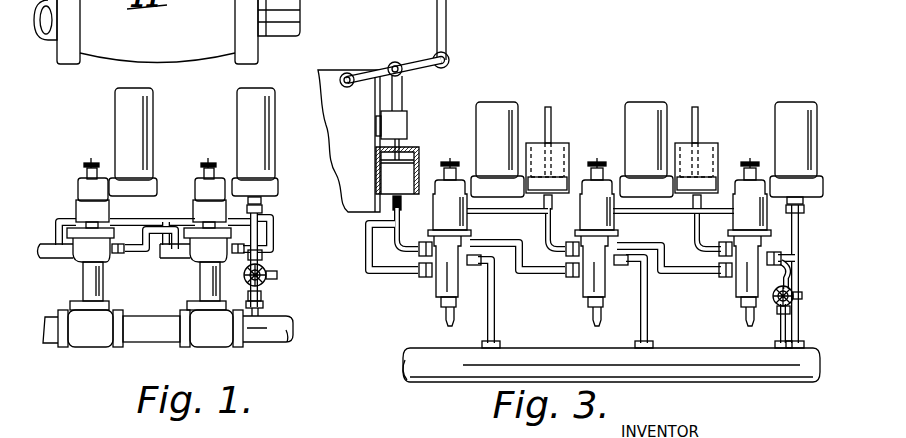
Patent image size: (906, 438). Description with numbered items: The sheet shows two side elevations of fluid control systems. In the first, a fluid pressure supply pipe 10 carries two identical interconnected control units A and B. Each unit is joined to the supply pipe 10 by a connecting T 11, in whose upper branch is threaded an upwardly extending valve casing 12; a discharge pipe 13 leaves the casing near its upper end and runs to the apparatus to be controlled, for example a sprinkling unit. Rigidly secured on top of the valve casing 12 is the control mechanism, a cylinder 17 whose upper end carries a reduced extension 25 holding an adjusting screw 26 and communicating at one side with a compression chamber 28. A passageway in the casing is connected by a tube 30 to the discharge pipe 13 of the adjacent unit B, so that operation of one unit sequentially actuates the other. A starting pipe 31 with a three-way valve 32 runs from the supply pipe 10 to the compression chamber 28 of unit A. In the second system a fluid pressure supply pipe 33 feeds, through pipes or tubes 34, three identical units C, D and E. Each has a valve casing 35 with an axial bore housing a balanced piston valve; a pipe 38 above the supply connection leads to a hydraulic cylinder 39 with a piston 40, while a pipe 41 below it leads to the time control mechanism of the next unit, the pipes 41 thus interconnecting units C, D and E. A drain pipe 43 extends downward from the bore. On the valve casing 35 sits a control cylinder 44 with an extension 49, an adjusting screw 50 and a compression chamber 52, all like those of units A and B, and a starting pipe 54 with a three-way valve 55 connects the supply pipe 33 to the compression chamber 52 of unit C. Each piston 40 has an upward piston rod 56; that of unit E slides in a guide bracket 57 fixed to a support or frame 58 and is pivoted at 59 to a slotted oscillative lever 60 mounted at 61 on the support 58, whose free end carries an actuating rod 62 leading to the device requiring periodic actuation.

In FIG. 1, the fluid pressure supply pipe 10 is at (160, 327).
In FIG. 1, the connecting T 11 is at (100, 333).
In FIG. 1, the valve casing 12 is at (88, 278).
In FIG. 1, the discharge pipe 13 is at (62, 250).
In FIG. 1, the cylinder 17 is at (87, 210).
In FIG. 1, the extension 25 is at (93, 188).
In FIG. 1, the adjusting screw 26 is at (93, 158).
In FIG. 1, the compression chamber 28 is at (127, 108).
In FIG. 1, the tube 30 is at (135, 250).
In FIG. 1, the starting pipe 31 is at (264, 298).
In FIG. 1, the three-way valve 32 is at (265, 267).
In FIG. 3, the fluid pressure supply pipe 33 is at (664, 363).
In FIG. 3, the pipe or tube 34 is at (495, 320).
In FIG. 3, the valve casing 35 is at (450, 270).
In FIG. 3, the pipe 38 is at (393, 233).
In FIG. 3, the hydraulic cylinder 39 is at (377, 180).
In FIG. 3, the piston 40 is at (415, 157).
In FIG. 3, the pipe 41 is at (390, 272).
In FIG. 3, the drain pipe 43 is at (443, 325).
In FIG. 3, the control cylinder 44 is at (455, 210).
In FIG. 3, the extension 49 is at (448, 187).
In FIG. 3, the adjusting screw 50 is at (455, 157).
In FIG. 3, the compression chamber 52 is at (493, 117).
In FIG. 3, the starting pipe 54 is at (798, 233).
In FIG. 3, the three-way valve 55 is at (779, 303).
In FIG. 3, the piston rod 56 is at (402, 100).
In FIG. 3, the guide bracket 57 is at (396, 123).
In FIG. 3, the support or frame 58 is at (349, 141).
In FIG. 3, the pivotal connection 59 is at (397, 62).
In FIG. 3, the oscillative lever or arm 60 is at (368, 70).
In FIG. 3, the pivot mounting 61 is at (350, 72).
In FIG. 3, the actuating rod 62 is at (450, 18).
In FIG. 1, the control unit A is at (222, 150).
In FIG. 1, the control unit B is at (90, 143).
In FIG. 3, the control unit C is at (764, 110).
In FIG. 3, the control unit D is at (606, 110).
In FIG. 3, the control unit E is at (468, 108).